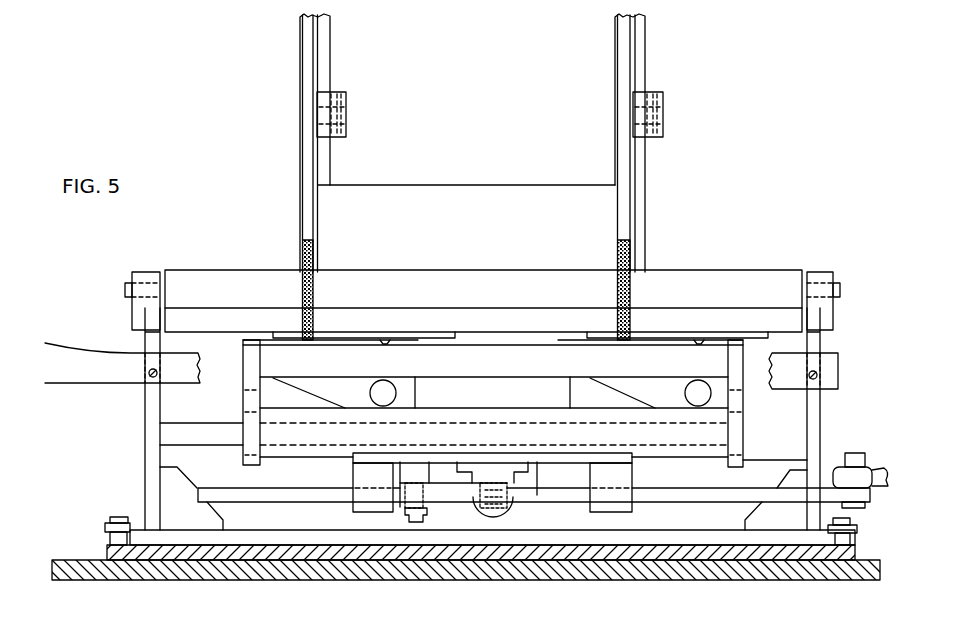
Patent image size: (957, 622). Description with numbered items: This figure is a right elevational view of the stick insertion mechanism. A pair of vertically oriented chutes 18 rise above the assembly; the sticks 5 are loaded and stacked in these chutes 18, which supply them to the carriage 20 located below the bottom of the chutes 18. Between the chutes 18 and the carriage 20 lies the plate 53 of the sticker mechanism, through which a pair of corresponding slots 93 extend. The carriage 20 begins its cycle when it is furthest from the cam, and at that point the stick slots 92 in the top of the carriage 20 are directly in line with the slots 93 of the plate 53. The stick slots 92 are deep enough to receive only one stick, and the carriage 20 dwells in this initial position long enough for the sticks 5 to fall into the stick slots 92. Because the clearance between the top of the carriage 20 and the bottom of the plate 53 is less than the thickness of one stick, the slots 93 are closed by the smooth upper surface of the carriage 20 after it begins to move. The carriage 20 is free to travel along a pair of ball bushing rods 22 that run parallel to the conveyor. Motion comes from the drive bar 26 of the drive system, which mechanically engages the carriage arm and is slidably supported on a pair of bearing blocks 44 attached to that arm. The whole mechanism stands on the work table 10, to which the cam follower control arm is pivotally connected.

The chutes 18 is at (330, 28).
The sticks 5 is at (314, 303).
The plate 53 is at (478, 320).
The slots 93 is at (315, 318).
The stick slots 92 is at (386, 341).
The carriage 20 is at (243, 405).
The ball bushing rods 22 is at (188, 438).
The drive bar 26 is at (322, 486).
The bearing blocks 44 is at (353, 507).
The work table 10 is at (83, 560).